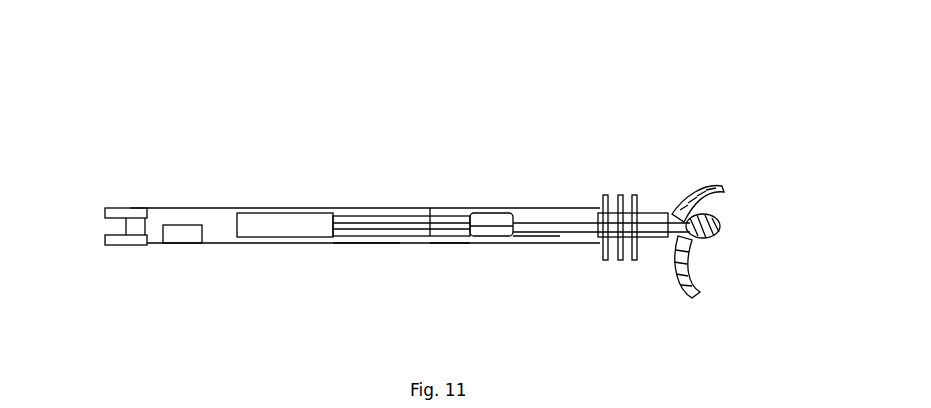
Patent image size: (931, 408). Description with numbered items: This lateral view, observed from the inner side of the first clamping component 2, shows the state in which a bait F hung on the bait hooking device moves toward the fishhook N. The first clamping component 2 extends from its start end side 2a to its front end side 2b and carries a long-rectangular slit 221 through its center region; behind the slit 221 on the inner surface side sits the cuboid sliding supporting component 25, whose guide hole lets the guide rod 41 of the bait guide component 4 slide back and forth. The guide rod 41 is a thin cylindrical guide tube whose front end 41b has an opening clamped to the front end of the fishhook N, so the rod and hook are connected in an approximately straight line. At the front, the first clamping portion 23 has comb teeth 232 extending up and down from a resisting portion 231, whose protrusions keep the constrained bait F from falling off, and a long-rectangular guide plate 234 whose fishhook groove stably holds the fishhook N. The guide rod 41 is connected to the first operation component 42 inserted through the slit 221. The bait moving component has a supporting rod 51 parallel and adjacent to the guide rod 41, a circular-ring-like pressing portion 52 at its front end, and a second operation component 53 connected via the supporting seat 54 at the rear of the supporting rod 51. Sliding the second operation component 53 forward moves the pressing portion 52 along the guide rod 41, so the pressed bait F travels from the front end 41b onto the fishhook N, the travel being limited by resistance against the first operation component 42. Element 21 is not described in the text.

The first clamping component 2 is at (373, 137).
The start end side 2a is at (154, 167).
The front end side 2b is at (655, 128).
The proximal jaw / connector 21 is at (100, 240).
The first clamping portion 23 is at (749, 132).
The sliding supporting component 25 is at (285, 182).
The bait guide component 4 is at (401, 171).
The guide rod 41 is at (601, 144).
The front end 41b is at (729, 268).
The first operation component 42 is at (483, 189).
The supporting rod 51 is at (520, 279).
The pressing portion 52 is at (698, 179).
The second operation component 53 is at (401, 189).
The supporting seat 54 is at (441, 282).
The slit 221 is at (356, 272).
The resisting portion 231 is at (633, 271).
The comb teeth 232 is at (576, 230).
The guide plate 234 is at (676, 271).
The bait F is at (789, 251).
The fishhook N is at (788, 171).